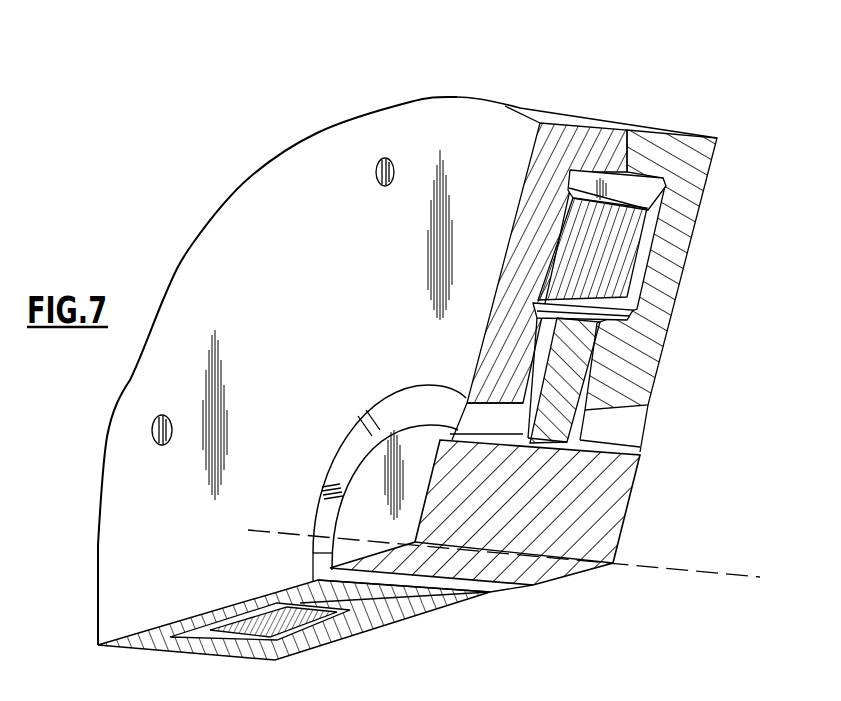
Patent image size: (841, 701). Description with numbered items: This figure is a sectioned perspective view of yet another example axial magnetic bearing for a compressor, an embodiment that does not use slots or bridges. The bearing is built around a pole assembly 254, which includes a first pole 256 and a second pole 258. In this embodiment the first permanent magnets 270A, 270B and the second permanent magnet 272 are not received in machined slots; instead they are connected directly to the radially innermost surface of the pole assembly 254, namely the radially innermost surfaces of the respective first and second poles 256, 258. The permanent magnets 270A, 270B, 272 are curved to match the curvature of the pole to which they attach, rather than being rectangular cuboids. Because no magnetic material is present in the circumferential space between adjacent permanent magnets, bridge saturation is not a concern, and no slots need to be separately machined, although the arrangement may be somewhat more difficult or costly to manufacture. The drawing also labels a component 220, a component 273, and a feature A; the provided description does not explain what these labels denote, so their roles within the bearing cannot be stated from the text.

The pole assembly 254 is at (475, 84).
The first pole 256 is at (438, 127).
The second pole 258 is at (665, 135).
The first permanent magnet 270A is at (347, 463).
The first permanent magnet 270B is at (413, 408).
The second permanent magnet 272 is at (620, 437).
The base block 220 is at (488, 512).
The base plate with pocket 273 is at (370, 607).
The axis A is at (690, 572).